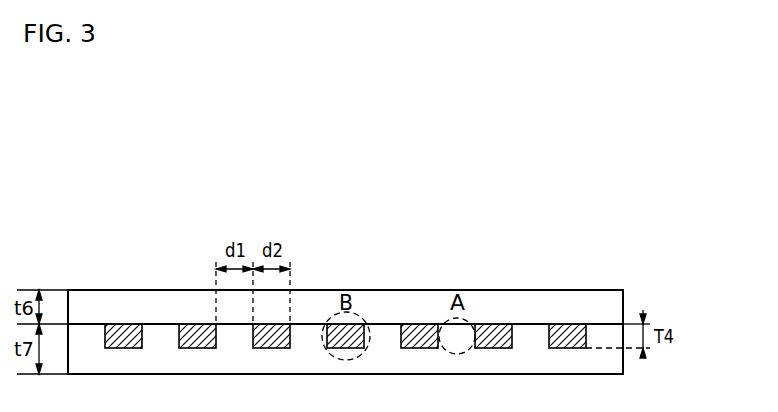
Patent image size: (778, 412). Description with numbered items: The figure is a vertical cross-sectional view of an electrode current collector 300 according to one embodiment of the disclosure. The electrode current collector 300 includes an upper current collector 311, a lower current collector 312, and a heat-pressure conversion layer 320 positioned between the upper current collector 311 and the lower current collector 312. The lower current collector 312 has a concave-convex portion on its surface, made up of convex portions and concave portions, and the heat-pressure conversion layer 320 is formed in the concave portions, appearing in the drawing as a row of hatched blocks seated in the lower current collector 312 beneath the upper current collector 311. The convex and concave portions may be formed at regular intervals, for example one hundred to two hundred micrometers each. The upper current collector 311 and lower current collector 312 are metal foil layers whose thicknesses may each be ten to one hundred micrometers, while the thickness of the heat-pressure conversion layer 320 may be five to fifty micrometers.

The electrode current collector 300 is at (301, 203).
The upper current collector 311 is at (617, 301).
The lower current collector 312 is at (620, 367).
The heat-pressure conversion layer 320 is at (561, 330).